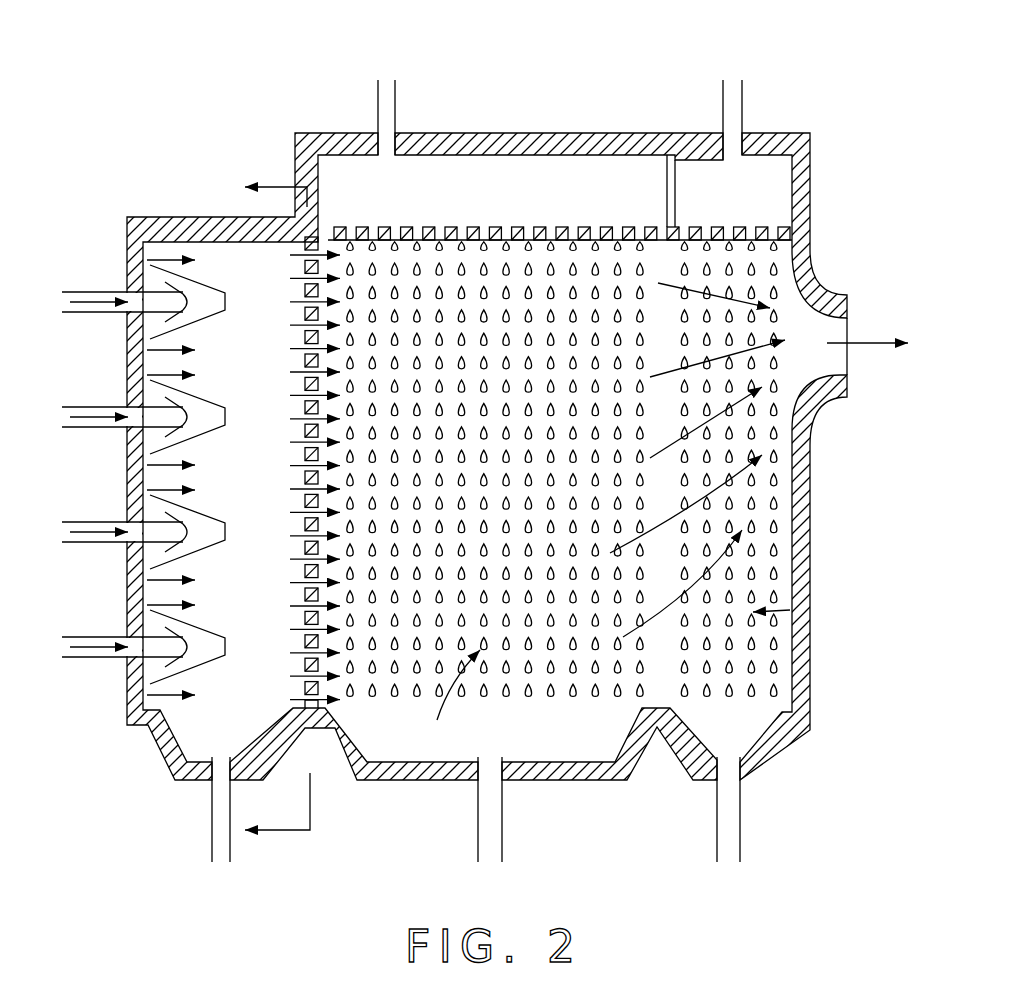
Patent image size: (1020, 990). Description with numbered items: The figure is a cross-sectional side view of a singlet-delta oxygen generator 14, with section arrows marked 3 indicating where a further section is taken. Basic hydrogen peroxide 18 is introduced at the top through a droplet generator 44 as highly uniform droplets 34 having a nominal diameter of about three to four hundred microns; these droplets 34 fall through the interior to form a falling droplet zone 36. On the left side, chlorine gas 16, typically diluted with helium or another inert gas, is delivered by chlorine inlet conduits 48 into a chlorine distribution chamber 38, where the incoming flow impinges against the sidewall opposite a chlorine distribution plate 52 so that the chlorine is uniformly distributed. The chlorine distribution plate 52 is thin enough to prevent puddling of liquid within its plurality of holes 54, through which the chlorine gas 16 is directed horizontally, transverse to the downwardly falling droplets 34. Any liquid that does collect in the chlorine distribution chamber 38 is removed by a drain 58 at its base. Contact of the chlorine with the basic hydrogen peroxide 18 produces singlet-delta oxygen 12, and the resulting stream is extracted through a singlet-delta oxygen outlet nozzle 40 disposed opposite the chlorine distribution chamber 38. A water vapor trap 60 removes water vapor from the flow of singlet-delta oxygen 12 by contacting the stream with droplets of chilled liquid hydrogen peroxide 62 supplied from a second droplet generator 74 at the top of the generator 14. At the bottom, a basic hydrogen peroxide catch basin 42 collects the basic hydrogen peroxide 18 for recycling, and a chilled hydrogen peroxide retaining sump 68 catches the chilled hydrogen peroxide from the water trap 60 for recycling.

The singlet-delta oxygen generator 14 is at (552, 70).
The droplet generator 44 is at (428, 178).
The droplet generator 74 is at (752, 185).
The chlorine distribution chamber 38 is at (172, 213).
The basic hydrogen peroxide 18 is at (463, 268).
The droplets 34 is at (557, 268).
The singlet-delta oxygen outlet nozzle 40 is at (837, 290).
The singlet-delta oxygen 12 is at (870, 340).
The chlorine gas 16 is at (77, 305).
The chlorine inlet conduits 48 is at (107, 313).
The holes 54 is at (302, 641).
The chlorine distribution plate 52 is at (303, 683).
The falling droplet zone 36 is at (408, 748).
The drain 58 is at (216, 776).
The basic hydrogen peroxide catch basin 42 is at (458, 765).
The chilled hydrogen peroxide retaining sump 68 is at (750, 733).
The water vapor trap 60 is at (790, 610).
The liquid hydrogen peroxide 62 is at (753, 667).
The section line FIG. 3 is at (277, 510).